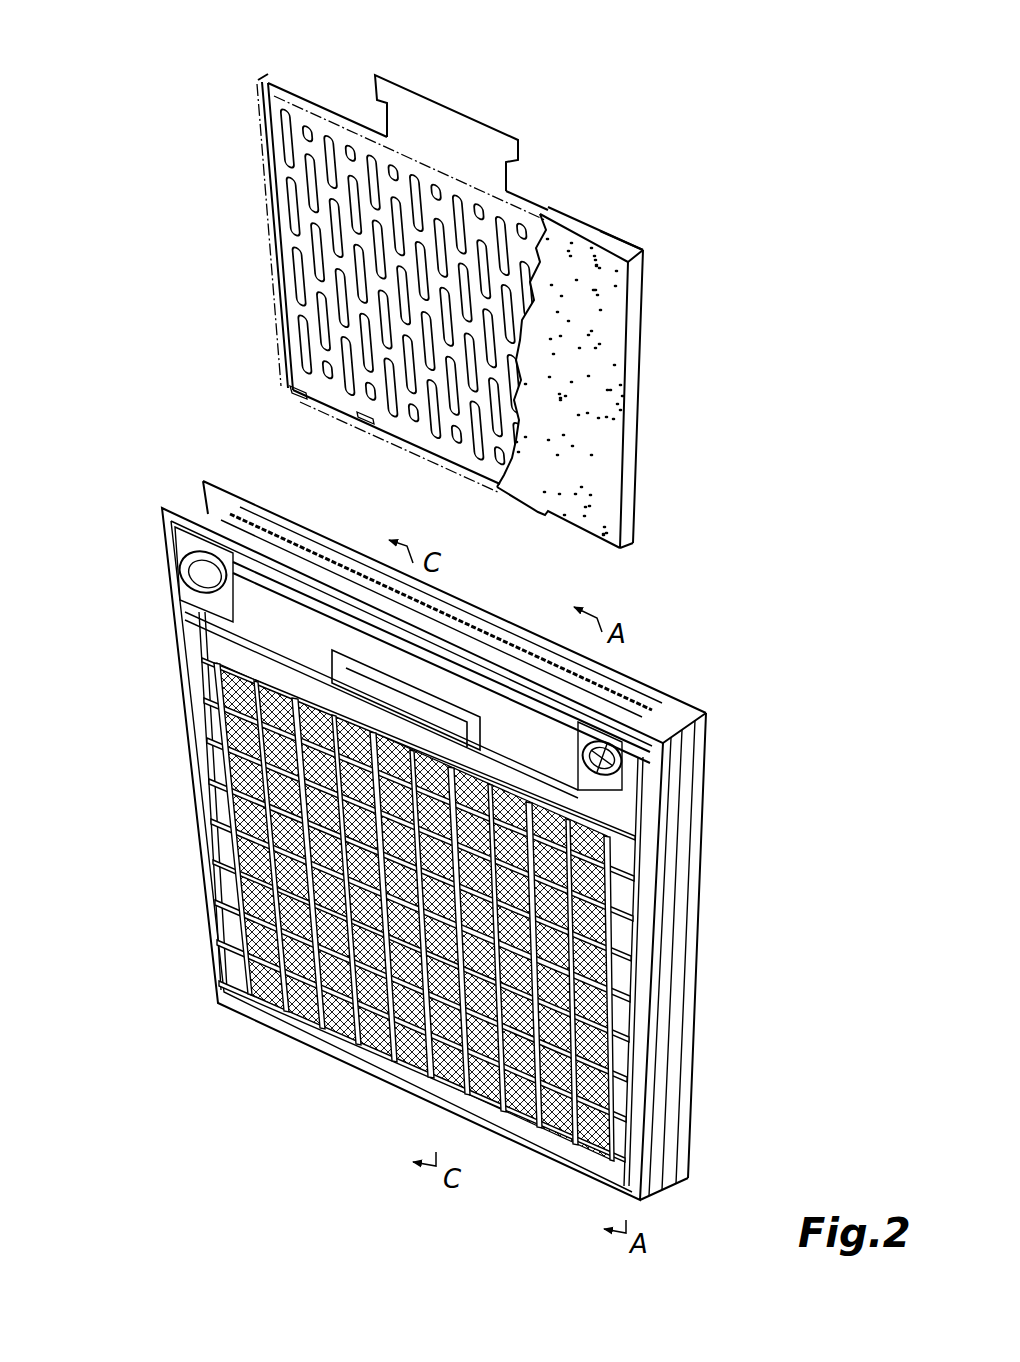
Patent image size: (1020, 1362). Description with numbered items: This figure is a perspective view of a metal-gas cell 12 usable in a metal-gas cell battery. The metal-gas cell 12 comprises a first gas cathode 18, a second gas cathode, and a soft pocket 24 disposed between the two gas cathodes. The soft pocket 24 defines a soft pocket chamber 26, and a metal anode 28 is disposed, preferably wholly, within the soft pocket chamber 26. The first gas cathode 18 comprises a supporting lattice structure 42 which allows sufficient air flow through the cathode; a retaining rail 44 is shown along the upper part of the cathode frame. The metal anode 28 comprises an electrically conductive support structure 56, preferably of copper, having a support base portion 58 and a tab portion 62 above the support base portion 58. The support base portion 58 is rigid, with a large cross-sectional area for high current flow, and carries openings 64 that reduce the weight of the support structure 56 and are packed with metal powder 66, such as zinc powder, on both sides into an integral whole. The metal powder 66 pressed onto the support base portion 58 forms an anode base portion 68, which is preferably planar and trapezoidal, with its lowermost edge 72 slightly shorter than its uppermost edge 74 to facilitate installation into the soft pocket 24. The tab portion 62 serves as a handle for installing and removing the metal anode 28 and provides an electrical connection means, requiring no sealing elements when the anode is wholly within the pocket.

The metal-gas cell 12 is at (161, 803).
The first gas cathode 18 is at (262, 922).
The soft pocket 24 is at (203, 515).
The soft pocket chamber 26 is at (257, 527).
The metal anode 28 is at (531, 172).
The supporting lattice structure 42 is at (238, 856).
The retaining rail 44 is at (335, 570).
The support structure 56 is at (500, 233).
The support base portion 58 is at (320, 388).
The tab portion 62 is at (446, 128).
The openings 64 is at (307, 127).
The metal powder 66 is at (587, 343).
The anode base portion 68 is at (529, 471).
The lowermost edge 72 is at (563, 528).
The uppermost edge 74 is at (631, 252).